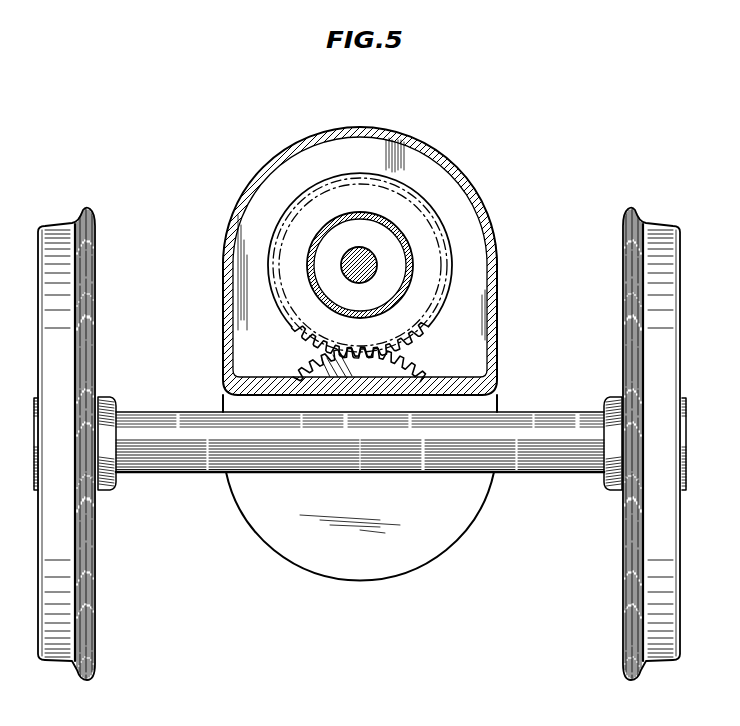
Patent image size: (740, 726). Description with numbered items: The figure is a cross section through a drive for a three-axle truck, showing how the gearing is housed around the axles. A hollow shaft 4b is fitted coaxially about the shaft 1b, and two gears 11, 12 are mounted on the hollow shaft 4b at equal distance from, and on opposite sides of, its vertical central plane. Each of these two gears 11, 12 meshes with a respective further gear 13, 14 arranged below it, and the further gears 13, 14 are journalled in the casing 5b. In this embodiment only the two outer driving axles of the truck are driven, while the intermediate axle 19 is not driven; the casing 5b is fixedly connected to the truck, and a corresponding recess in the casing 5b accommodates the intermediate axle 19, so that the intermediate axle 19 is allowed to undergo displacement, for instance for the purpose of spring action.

The casing 5b is at (467, 182).
The gear 12 is at (349, 265).
The gear 11 is at (283, 322).
The further gear 14 is at (382, 362).
The further gear 13 is at (408, 367).
The hollow shaft 4b is at (405, 255).
The shaft 1b is at (352, 273).
The intermediate axle 19 is at (362, 460).